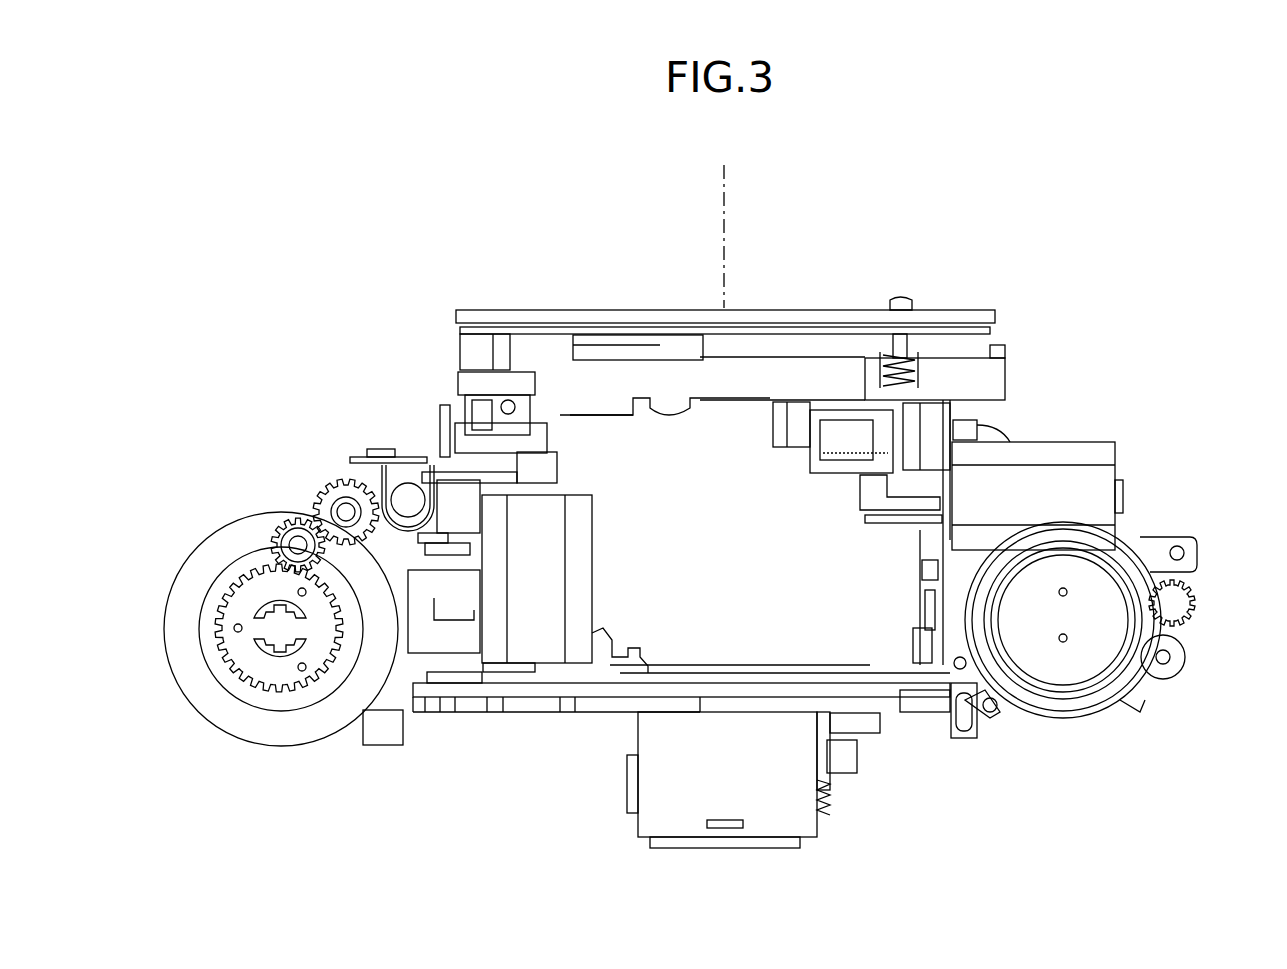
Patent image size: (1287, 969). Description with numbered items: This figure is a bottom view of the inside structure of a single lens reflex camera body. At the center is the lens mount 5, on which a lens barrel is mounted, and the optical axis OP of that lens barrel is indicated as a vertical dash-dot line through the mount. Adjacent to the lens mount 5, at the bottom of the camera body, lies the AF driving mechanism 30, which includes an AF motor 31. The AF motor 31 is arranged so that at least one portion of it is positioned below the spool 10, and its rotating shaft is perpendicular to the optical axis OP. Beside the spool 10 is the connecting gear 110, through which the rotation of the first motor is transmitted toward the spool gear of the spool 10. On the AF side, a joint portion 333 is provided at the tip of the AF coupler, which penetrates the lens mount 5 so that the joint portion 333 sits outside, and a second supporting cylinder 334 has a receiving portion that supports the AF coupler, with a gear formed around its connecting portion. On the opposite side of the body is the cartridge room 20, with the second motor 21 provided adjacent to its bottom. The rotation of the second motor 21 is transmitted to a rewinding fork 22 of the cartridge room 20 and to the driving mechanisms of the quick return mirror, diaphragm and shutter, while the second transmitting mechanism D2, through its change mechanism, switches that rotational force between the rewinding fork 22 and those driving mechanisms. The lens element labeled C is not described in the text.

The lens mount 5 is at (497, 306).
The optical axis OP is at (727, 177).
The AF driving mechanism 30 is at (1024, 342).
The joint portion 333 is at (912, 300).
The second supporting cylinder 334 is at (888, 345).
The AF motor 31 is at (1087, 445).
The lens C is at (1103, 590).
The spool 10 is at (1125, 688).
The connecting gear 110 is at (1186, 665).
The cartridge room 20 is at (181, 690).
The rewinding fork 22 is at (278, 660).
The second motor 21 is at (534, 645).
The second transmitting mechanism D2 is at (372, 411).